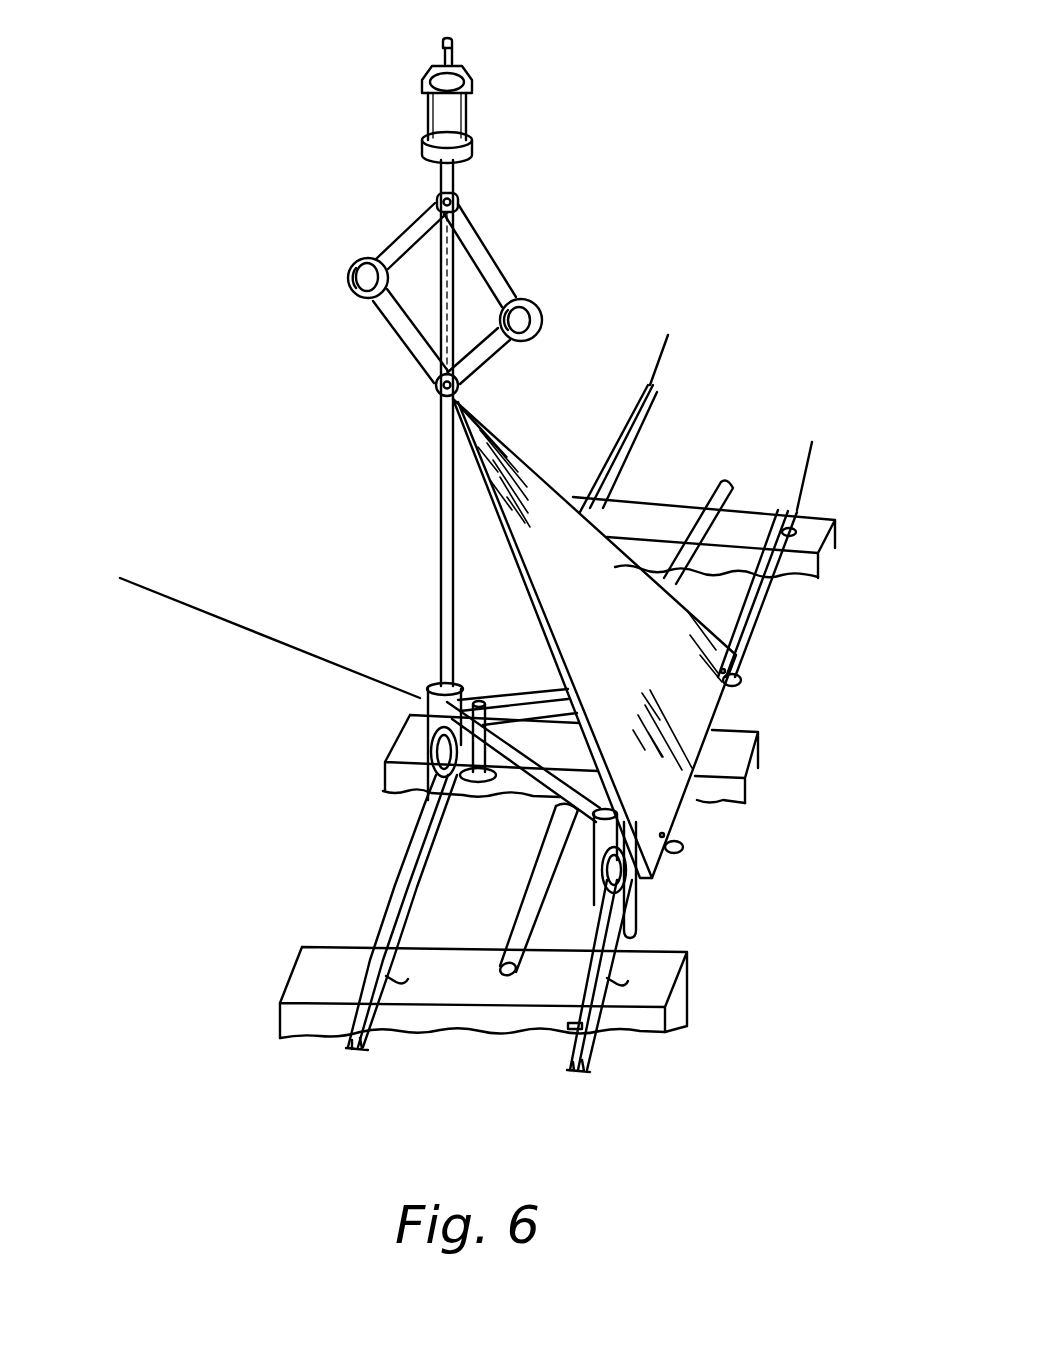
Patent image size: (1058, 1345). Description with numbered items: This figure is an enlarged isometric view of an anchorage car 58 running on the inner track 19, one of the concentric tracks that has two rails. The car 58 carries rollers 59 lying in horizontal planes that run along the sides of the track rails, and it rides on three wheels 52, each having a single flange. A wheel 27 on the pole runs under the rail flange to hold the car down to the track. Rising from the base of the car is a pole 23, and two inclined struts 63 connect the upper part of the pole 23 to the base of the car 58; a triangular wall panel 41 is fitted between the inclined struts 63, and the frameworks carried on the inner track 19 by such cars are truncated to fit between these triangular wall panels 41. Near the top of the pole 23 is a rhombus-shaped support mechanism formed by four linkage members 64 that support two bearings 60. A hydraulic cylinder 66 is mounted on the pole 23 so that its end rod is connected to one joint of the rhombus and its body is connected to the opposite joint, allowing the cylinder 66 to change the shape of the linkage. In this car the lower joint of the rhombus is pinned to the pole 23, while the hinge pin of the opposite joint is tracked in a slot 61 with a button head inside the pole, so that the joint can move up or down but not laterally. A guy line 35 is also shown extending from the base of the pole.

The inner track 19 is at (360, 897).
The pole 23 is at (440, 493).
The wheel 27 is at (637, 922).
The guy wire 35 is at (247, 630).
The triangular wall panel 41 is at (593, 570).
The wheel 52 is at (433, 748).
The car 58 is at (517, 447).
The roller 59 is at (742, 678).
The bearing 60 is at (532, 299).
The slot 61 is at (440, 208).
The inclined strut 63 is at (505, 534).
The linkage member 64 is at (478, 252).
The hydraulic cylinder 66 is at (450, 118).